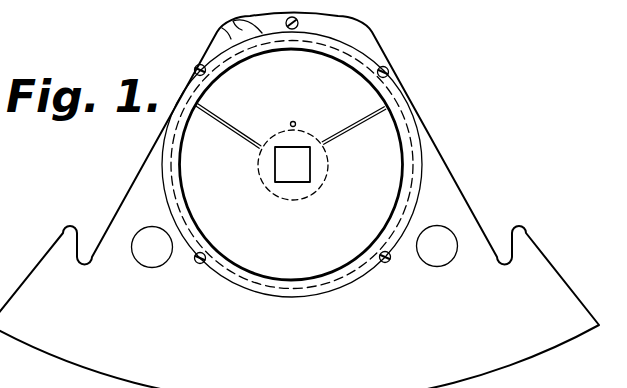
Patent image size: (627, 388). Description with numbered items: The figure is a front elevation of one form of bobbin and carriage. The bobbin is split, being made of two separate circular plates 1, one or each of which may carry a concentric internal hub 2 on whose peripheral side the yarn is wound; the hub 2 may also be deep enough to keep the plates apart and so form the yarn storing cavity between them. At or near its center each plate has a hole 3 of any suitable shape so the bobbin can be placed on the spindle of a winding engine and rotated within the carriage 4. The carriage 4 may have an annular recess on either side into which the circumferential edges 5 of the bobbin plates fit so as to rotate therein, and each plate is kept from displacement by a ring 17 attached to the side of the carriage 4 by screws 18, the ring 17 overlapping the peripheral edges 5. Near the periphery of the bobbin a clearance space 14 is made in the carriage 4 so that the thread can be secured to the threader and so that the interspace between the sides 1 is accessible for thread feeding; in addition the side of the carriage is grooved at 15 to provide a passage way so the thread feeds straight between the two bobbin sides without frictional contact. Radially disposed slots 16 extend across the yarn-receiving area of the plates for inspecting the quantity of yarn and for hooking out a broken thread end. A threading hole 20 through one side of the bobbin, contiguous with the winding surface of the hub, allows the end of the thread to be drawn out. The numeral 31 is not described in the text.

The circular plates 1 is at (291, 164).
The internal hub 2 is at (291, 201).
The hole 3 is at (292, 164).
The carriage 4 is at (299, 200).
The circumferential edges 5 is at (248, 286).
The clearance space 14 is at (228, 37).
The groove 15 is at (232, 22).
The slots 16 is at (224, 125).
The ring 17 is at (341, 283).
The screws 18 is at (389, 72).
The threading hole 20 is at (294, 122).
The screw 31 is at (296, 17).